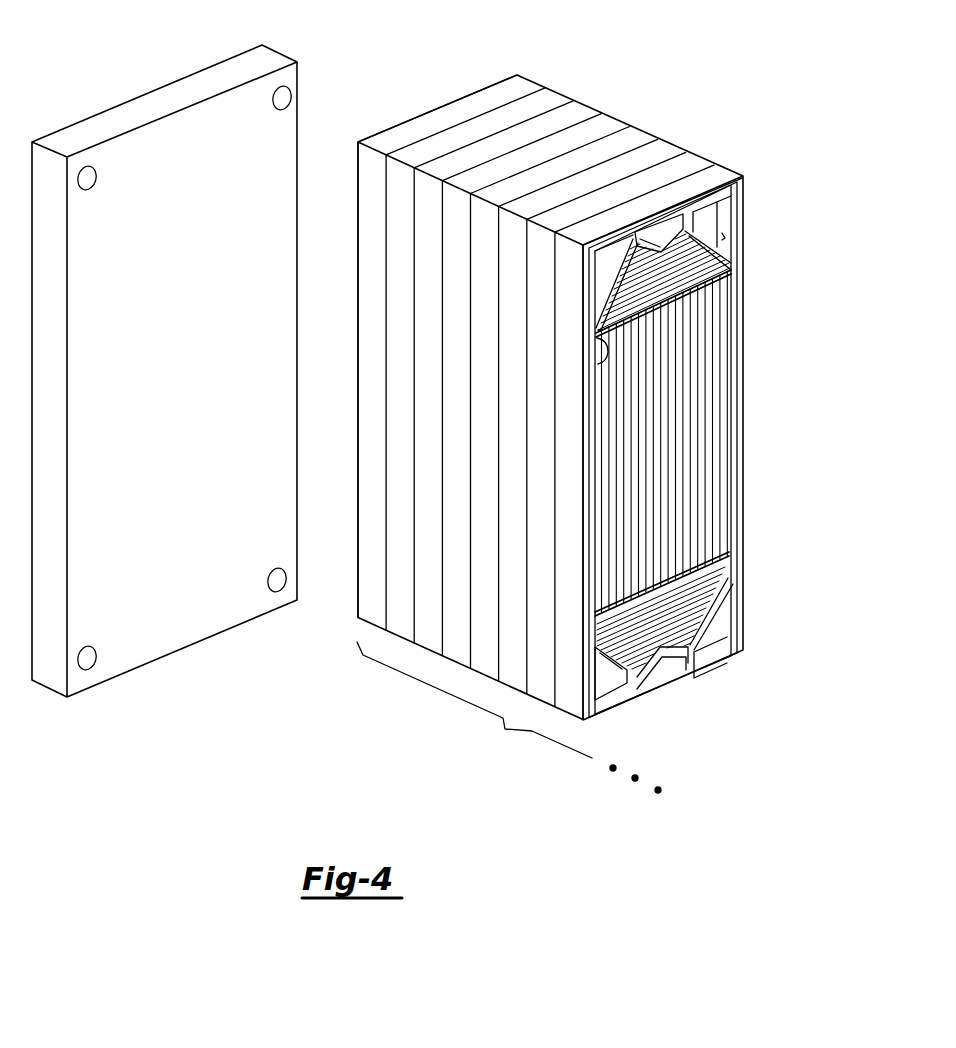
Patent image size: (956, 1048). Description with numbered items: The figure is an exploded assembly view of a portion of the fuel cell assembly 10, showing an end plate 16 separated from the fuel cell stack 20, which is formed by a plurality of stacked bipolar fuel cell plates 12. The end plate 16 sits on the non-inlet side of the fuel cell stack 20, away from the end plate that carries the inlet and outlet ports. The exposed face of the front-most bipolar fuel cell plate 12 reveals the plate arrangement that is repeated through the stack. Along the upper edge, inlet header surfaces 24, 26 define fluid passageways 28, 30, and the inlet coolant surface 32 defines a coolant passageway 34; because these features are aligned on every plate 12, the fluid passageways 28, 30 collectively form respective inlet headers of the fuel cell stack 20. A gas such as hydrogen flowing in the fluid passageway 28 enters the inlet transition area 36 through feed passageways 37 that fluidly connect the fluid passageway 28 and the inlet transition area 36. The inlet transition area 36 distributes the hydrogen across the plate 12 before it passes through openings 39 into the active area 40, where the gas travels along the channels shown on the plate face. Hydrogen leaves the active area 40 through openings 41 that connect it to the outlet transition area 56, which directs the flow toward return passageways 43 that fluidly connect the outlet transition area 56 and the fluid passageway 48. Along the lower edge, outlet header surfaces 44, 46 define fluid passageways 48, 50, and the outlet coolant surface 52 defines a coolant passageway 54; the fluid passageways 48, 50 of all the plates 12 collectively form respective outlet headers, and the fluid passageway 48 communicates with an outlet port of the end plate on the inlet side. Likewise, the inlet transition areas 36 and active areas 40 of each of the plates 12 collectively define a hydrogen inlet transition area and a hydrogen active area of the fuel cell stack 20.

The fuel cell assembly 10 is at (748, 52).
The bipolar fuel cell plate 12 is at (545, 88).
The end plate 16 is at (150, 90).
The fuel cell stack 20 is at (474, 700).
The inlet header surface 24 is at (610, 244).
The inlet header surface 26 is at (724, 237).
The fluid passageway 28 is at (598, 257).
The fluid passageway 30 is at (702, 218).
The inlet coolant surface 32 is at (658, 238).
The coolant passageway 34 is at (667, 247).
The inlet transition area 36 is at (689, 282).
The feed passageway 37 is at (598, 289).
The opening 39 is at (601, 337).
The active area 40 is at (684, 463).
The opening 41 is at (607, 607).
The return passageway 43 is at (727, 608).
The outlet header surface 44 is at (703, 652).
The outlet header surface 46 is at (623, 678).
The fluid passageway 48 is at (722, 622).
The fluid passageway 50 is at (603, 690).
The outlet coolant surface 52 is at (655, 675).
The coolant passageway 54 is at (668, 667).
The outlet transition area 56 is at (712, 581).